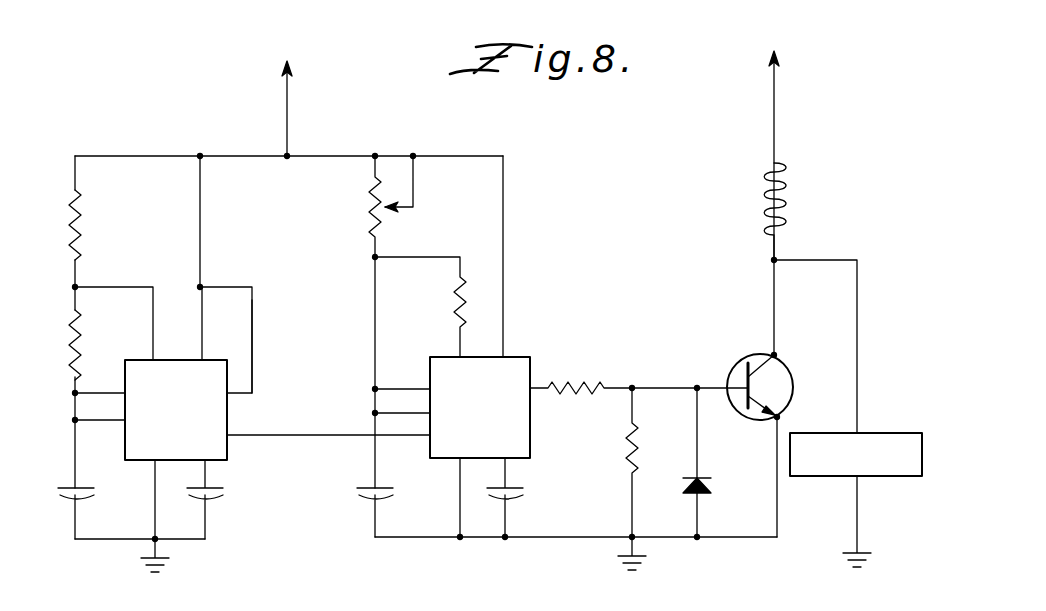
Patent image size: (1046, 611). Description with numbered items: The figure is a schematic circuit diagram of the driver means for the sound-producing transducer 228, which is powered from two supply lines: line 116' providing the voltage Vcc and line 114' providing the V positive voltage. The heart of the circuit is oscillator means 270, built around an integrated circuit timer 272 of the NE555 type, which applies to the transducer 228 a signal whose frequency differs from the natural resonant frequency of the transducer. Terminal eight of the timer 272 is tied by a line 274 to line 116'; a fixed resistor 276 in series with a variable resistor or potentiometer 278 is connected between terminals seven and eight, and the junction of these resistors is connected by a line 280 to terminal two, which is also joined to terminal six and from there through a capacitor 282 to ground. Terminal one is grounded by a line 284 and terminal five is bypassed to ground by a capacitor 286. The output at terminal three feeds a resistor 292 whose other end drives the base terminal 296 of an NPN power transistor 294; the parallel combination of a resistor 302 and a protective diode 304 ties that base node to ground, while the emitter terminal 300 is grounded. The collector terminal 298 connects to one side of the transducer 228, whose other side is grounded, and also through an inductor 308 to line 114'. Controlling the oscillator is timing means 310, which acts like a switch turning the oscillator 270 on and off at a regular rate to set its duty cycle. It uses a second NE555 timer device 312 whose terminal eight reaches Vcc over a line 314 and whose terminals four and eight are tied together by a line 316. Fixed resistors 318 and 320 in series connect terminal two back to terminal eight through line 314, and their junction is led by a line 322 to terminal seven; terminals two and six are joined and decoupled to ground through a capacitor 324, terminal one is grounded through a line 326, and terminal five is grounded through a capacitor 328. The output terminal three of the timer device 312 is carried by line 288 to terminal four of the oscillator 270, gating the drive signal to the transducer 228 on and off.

The line 116' is at (251, 108).
The line 114' is at (732, 155).
The fixed resistor 320 is at (83, 216).
The line 322 is at (123, 287).
The fixed resistor 318 is at (82, 346).
The line 314 is at (206, 216).
The line 316 is at (252, 322).
The timing means 310 is at (275, 377).
The integrated circuit timer device 312 is at (227, 417).
The capacitor 324 is at (93, 498).
The line 326 is at (155, 492).
The capacitor 328 is at (218, 498).
The line 288 is at (288, 436).
The variable resistor or potentiometer 278 is at (372, 199).
The line 280 is at (375, 334).
The fixed resistor 276 is at (459, 295).
The line 274 is at (504, 196).
The oscillator means 270 is at (543, 344).
The integrated circuit timer 272 is at (527, 427).
The capacitor 282 is at (362, 492).
The line 284 is at (458, 492).
The capacitor 286 is at (527, 492).
The resistor 292 is at (581, 384).
The resistor 302 is at (628, 453).
The base terminal 296 is at (697, 385).
The protective diode 304 is at (702, 487).
The power transistor 294 is at (738, 362).
The collector terminal 298 is at (777, 355).
The emitter terminal 300 is at (777, 422).
The inductor 308 is at (790, 192).
The transducer 228 is at (921, 406).